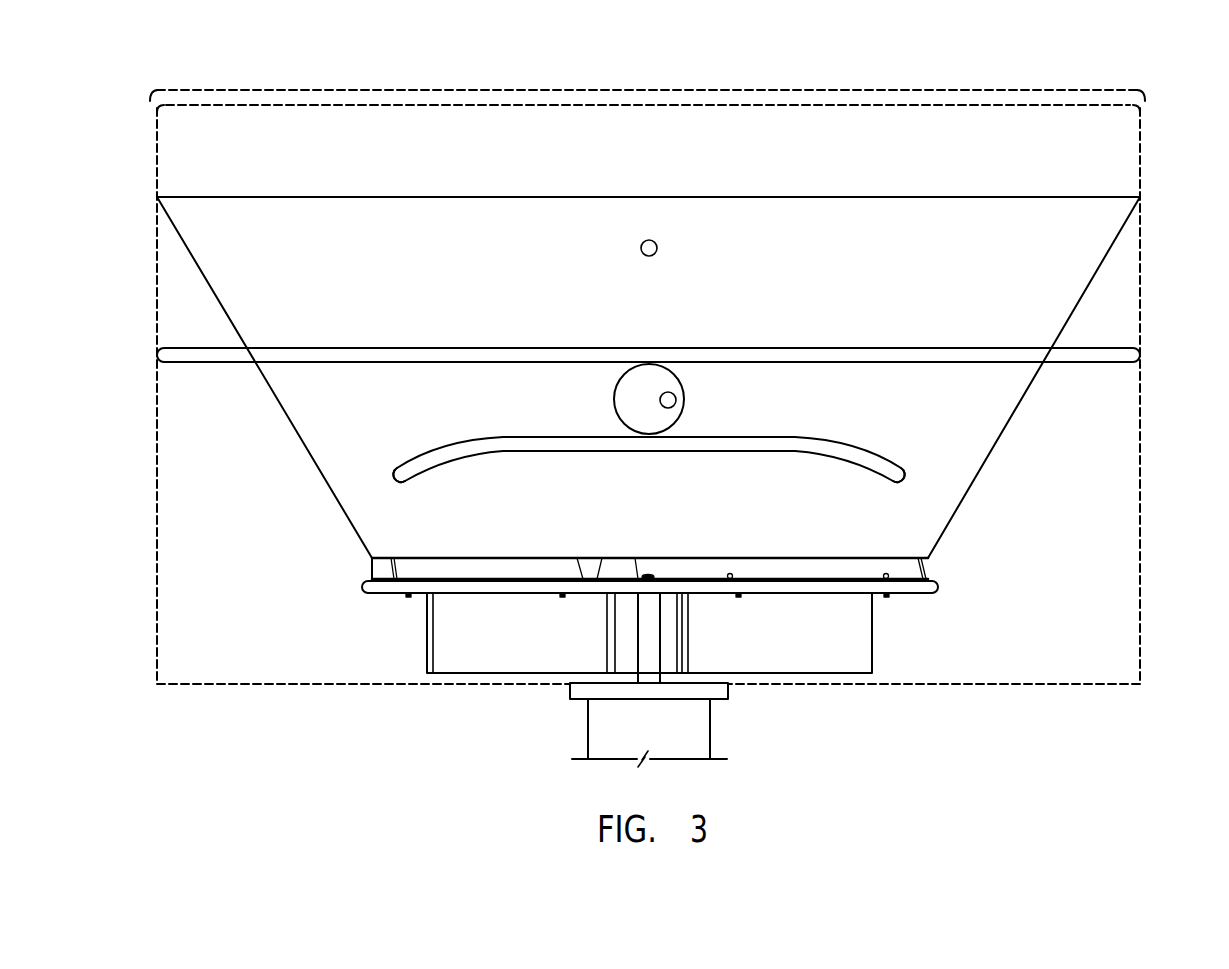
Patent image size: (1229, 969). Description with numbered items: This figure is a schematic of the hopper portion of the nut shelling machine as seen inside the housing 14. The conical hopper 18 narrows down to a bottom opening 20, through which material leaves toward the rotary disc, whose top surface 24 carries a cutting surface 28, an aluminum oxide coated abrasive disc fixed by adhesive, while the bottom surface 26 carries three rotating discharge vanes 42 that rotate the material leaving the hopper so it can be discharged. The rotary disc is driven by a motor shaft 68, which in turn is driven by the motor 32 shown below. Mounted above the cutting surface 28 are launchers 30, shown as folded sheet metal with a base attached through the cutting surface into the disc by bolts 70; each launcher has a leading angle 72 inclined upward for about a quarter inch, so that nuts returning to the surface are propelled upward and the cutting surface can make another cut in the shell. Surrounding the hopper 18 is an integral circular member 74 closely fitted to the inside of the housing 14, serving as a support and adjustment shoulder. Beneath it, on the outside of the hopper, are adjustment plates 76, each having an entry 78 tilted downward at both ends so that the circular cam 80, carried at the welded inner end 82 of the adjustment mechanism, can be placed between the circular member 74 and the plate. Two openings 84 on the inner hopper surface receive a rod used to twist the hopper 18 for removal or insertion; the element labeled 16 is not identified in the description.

The housing 14 is at (1142, 153).
The lid 16 is at (1055, 90).
The hopper 18 is at (960, 181).
The bottom opening 20 is at (930, 563).
The top surface 24 is at (931, 581).
The bottom surface 26 is at (906, 597).
The cutting surface 28 is at (597, 577).
The launchers 30 is at (391, 576).
The motor 32 is at (709, 741).
The rotating discharge vanes 42 is at (873, 651).
The motor shaft 68 is at (661, 655).
The bolts 70 is at (728, 597).
The leading angle 72 is at (412, 566).
The circular member 74 is at (243, 364).
The adjustment plates 76 is at (743, 437).
The entry 78 is at (416, 458).
The circular cam 80 is at (615, 407).
The welded inner end 82 is at (676, 397).
The openings 84 is at (656, 253).